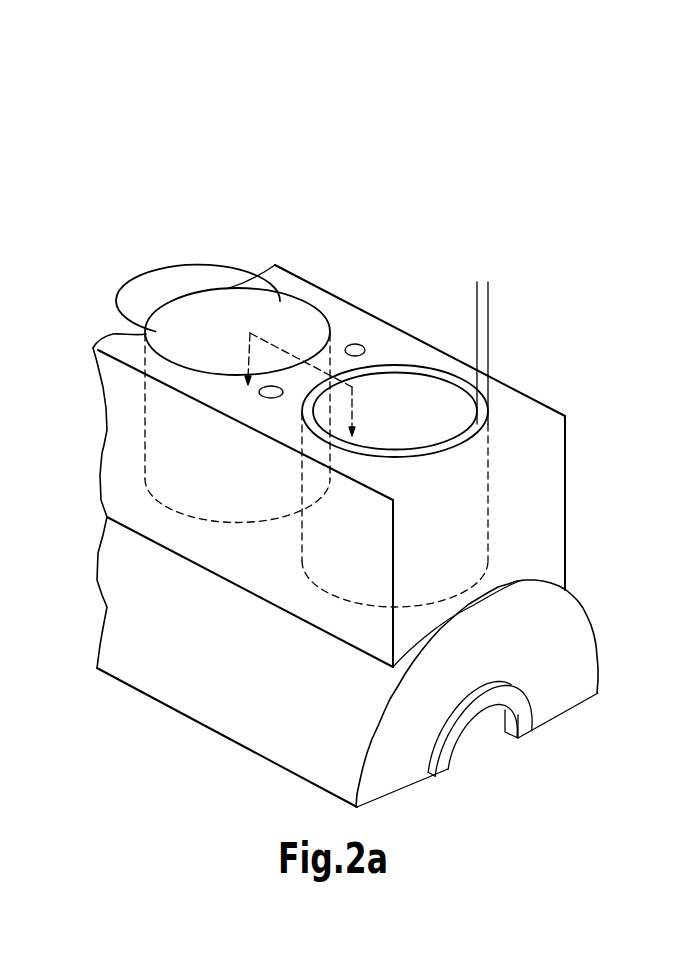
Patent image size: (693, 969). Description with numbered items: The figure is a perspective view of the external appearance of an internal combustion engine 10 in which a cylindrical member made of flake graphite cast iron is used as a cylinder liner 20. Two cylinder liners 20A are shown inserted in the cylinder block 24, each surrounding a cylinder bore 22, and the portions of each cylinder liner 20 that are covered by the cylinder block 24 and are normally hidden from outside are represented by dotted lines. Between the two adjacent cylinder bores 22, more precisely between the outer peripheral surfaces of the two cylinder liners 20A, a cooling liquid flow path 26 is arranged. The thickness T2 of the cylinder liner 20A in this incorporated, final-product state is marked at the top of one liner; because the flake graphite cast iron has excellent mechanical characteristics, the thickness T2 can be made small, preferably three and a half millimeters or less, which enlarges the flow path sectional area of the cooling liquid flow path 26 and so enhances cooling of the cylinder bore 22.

The internal combustion engine 10 is at (369, 450).
The cylinder liner 20 is at (157, 333).
The cylinder liner 20A is at (374, 431).
The cylinder bore 22 is at (232, 313).
The cylinder block 24 is at (567, 443).
The cooling liquid flow path 26 is at (360, 343).
The thickness T2 is at (512, 298).